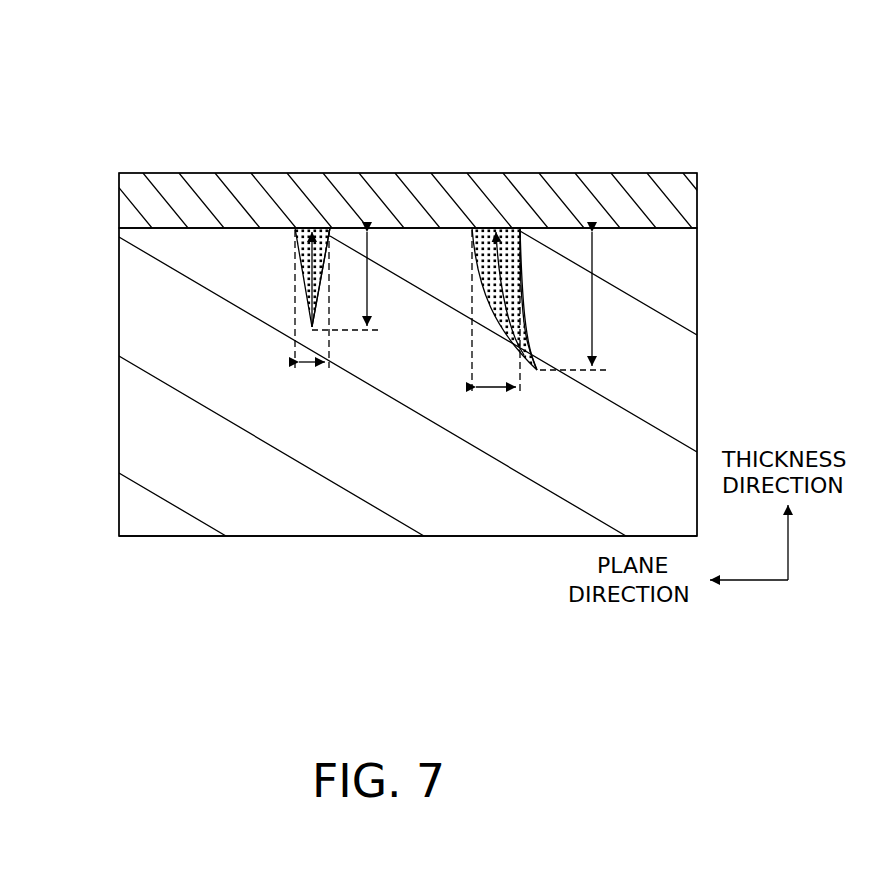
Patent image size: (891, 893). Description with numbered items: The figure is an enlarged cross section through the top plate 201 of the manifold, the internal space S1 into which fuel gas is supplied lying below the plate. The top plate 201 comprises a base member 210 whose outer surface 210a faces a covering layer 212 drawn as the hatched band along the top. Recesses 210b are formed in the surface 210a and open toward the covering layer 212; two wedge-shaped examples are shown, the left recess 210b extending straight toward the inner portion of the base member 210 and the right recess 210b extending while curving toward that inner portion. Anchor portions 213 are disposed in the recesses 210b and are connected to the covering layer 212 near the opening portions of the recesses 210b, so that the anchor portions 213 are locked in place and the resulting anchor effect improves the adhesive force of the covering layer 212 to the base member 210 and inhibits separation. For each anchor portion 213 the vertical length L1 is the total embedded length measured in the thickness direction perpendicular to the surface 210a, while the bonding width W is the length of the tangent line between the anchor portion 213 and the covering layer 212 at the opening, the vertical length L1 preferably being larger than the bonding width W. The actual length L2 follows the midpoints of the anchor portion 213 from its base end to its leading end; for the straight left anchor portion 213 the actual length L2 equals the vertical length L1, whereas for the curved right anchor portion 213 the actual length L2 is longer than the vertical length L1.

The top plate 201 is at (711, 113).
The base member 210 is at (688, 378).
The surface 210a is at (189, 226).
The recesses 210b is at (294, 263).
The covering layer 212 is at (697, 203).
The anchor portions 213 is at (329, 243).
The vertical length L1 is at (368, 313).
The actual length L2 is at (310, 307).
The bonding width W is at (312, 365).
The internal space S1 is at (427, 586).